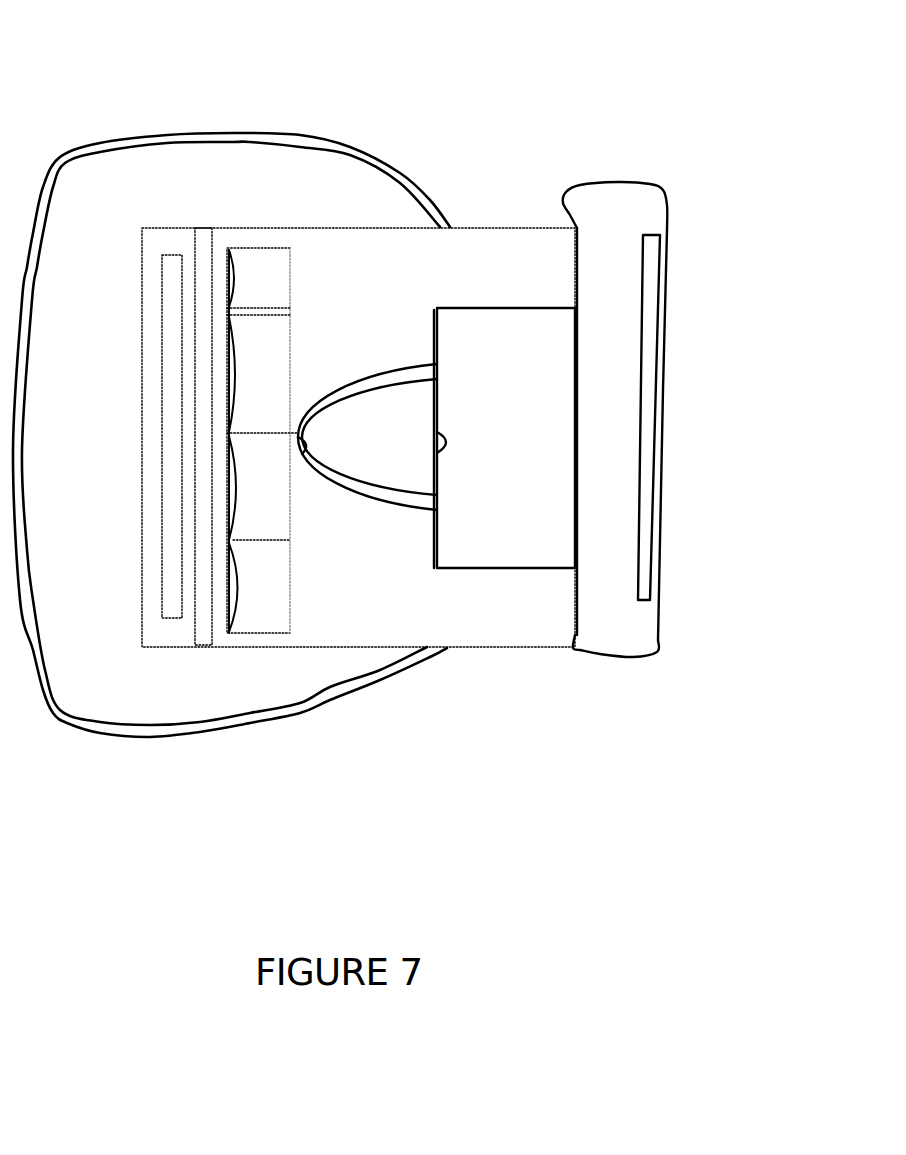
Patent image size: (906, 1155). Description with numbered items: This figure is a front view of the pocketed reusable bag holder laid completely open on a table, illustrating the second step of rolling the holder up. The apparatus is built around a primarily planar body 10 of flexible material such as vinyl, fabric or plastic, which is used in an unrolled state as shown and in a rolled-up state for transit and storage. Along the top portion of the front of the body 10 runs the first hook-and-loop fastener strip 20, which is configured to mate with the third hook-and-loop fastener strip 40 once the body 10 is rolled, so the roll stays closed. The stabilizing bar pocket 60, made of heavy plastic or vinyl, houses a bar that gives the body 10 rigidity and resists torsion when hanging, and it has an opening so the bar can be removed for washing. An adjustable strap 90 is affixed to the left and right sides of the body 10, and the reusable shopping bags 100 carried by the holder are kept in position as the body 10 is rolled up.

The planar body 10 is at (613, 212).
The first hook-and-loop fastener strip 20 is at (173, 268).
The third hook-and-loop fastener strip 40 is at (652, 267).
The stabilizing bar pocket 60 is at (208, 240).
The strap 90 is at (245, 136).
The shopping bags 100 is at (385, 497).